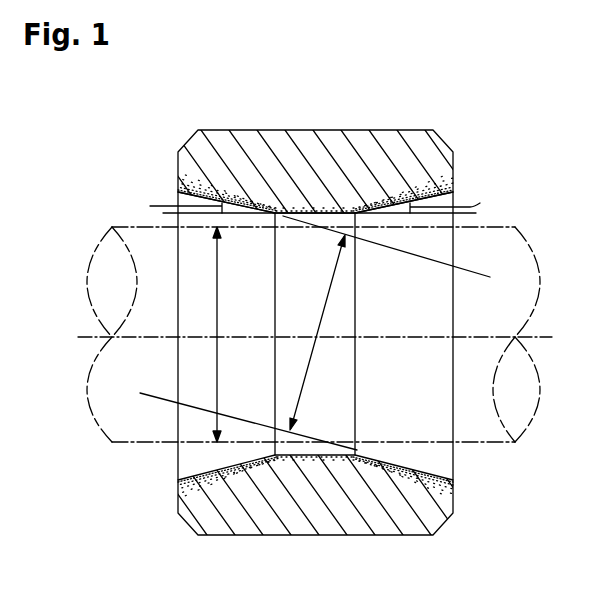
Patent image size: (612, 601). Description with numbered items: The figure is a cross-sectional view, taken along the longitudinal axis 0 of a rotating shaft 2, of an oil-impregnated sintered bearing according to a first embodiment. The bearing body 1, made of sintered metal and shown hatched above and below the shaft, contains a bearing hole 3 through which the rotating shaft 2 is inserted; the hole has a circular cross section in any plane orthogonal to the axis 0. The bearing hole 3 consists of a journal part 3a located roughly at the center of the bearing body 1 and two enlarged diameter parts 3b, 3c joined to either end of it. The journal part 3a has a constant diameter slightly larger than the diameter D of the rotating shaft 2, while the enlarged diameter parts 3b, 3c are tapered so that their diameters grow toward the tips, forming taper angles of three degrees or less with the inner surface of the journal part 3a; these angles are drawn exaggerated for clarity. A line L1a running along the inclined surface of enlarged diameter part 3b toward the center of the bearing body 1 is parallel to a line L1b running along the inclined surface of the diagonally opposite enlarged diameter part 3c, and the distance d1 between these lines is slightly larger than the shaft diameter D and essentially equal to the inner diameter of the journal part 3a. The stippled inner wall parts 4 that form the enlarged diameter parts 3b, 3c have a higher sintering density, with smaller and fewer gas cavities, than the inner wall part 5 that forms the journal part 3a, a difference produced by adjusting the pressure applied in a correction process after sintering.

The bearing body 1 is at (390, 130).
The rotating shaft 2 is at (514, 227).
The bearing hole 3 is at (428, 355).
The journal part 3a is at (297, 215).
The enlarged diameter part 3b is at (178, 195).
The enlarged diameter part 3c is at (453, 195).
The inner wall parts 4 is at (238, 190).
The inner wall part 5 is at (313, 210).
The diameter of the rotating shaft D is at (209, 334).
The distance between lines L1a and L1b d1 is at (317, 332).
The line along inclined surface of enlarged diameter part 3b L1a is at (472, 271).
The line along inclined surface of enlarged diameter part 3c L1b is at (160, 398).
The longitudinal axis 0 is at (320, 338).